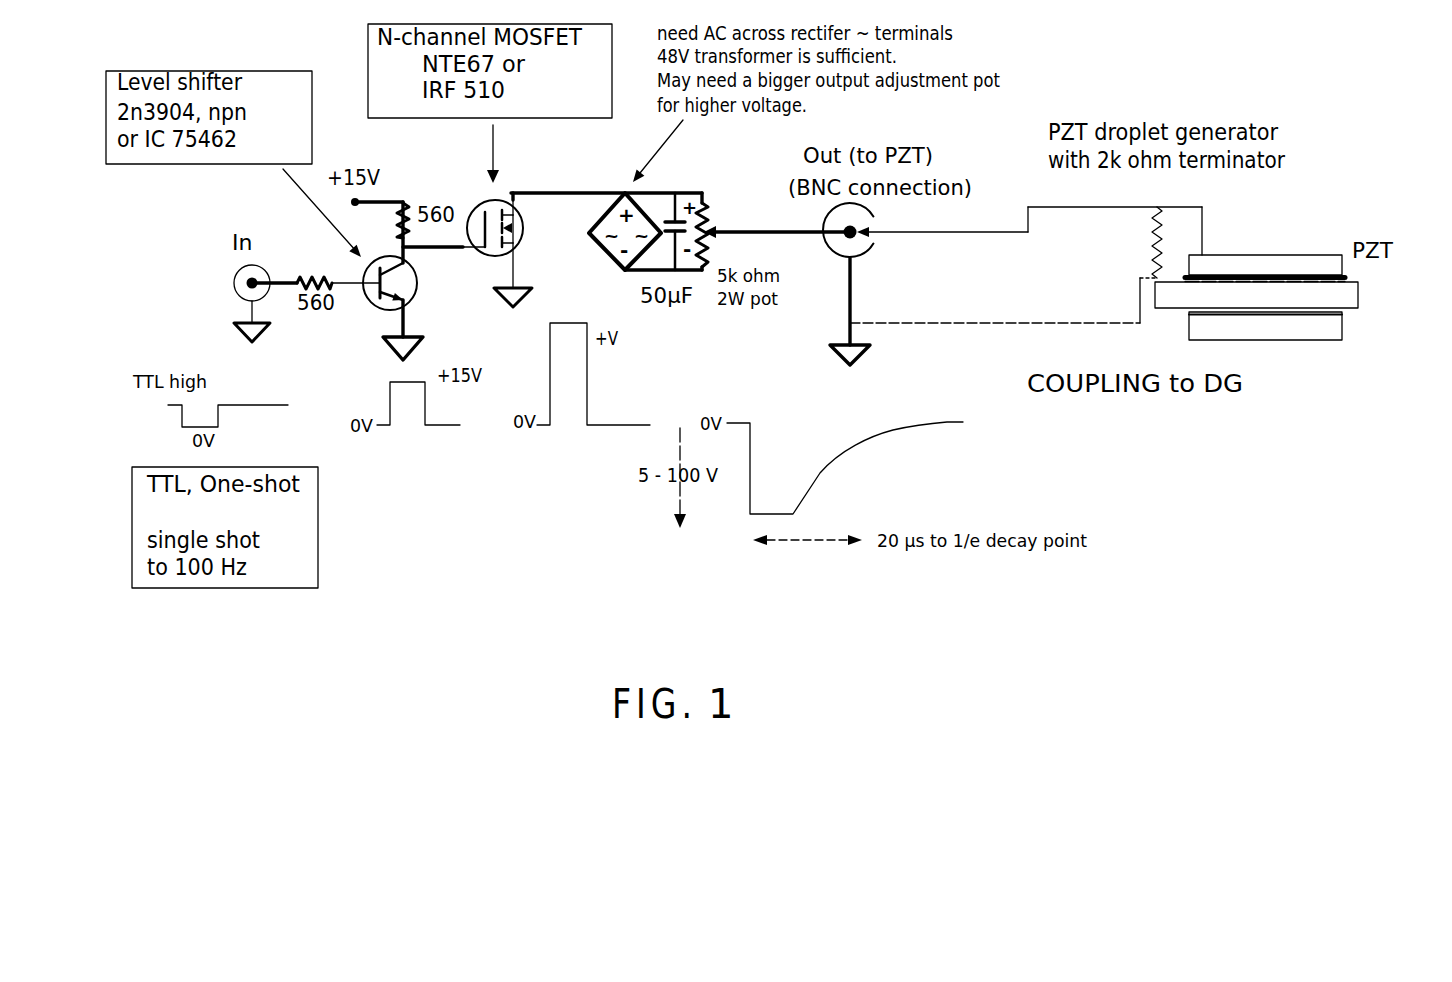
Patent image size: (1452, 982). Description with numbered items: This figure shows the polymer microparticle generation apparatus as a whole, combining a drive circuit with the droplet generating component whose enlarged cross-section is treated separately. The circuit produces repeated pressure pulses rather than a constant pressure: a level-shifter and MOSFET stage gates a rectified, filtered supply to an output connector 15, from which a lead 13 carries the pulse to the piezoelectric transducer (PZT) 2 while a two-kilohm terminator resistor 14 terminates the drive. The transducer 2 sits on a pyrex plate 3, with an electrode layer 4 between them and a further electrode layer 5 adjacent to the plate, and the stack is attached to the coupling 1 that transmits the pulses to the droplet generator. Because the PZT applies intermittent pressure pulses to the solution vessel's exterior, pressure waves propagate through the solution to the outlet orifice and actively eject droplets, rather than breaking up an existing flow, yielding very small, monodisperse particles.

The coupling to droplet generator 1 is at (1295, 360).
The PZT element 2 is at (1287, 262).
The pyrex plate 3 is at (1348, 298).
The electrode layer 4 is at (1346, 276).
The electrode layer 5 is at (1177, 279).
The lead wire 13 is at (1204, 253).
The 2k ohm terminator resistor 14 is at (1161, 238).
The BNC output connector 15 is at (867, 253).